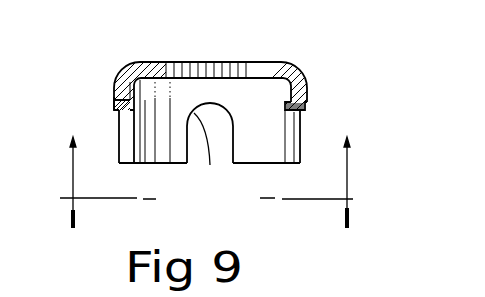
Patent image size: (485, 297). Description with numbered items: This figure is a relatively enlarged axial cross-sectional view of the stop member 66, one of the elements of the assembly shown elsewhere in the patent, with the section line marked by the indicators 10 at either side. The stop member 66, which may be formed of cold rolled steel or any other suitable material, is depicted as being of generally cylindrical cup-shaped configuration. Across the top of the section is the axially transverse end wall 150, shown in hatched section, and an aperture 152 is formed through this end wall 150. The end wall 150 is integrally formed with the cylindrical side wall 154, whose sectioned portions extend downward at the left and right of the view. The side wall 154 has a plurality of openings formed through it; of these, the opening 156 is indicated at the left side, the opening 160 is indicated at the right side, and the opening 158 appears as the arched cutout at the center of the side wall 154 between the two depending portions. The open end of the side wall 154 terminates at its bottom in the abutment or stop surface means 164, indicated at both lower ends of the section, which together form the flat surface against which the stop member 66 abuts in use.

The axially transverse end wall 150 is at (262, 62).
The aperture 152 is at (180, 63).
The stop member 66 is at (300, 61).
The opening 156 is at (118, 126).
The opening 160 is at (296, 118).
The opening 158 is at (209, 152).
The cylindrical side wall 154 is at (269, 120).
The abutment or stop surface means 164 is at (170, 166).
The section line 10- 10 is at (211, 176).